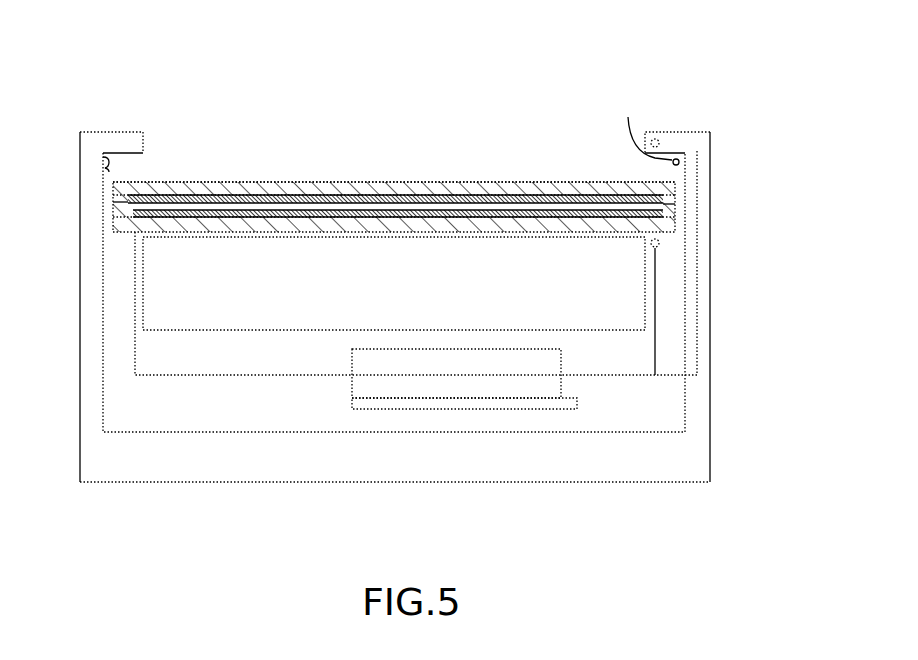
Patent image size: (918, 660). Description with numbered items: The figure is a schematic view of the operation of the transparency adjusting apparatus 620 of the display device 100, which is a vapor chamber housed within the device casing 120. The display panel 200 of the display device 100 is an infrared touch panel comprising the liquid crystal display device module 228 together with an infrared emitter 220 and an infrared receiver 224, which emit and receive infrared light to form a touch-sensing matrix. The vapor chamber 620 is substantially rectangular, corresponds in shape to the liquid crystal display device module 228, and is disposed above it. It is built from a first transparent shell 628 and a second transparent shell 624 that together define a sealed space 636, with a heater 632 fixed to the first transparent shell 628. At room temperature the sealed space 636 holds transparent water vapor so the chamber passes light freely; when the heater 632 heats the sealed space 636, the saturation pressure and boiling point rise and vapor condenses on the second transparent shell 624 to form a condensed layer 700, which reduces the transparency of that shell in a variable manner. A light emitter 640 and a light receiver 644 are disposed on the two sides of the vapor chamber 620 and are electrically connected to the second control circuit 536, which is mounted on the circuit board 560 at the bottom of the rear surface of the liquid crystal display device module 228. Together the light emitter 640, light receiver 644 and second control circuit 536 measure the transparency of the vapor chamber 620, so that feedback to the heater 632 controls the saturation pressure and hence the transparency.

The display device 100 is at (790, 55).
The device casing 120 is at (712, 440).
The infrared touch panel 200 is at (187, 388).
The infrared emitter 220 is at (105, 170).
The infrared receiver 224 is at (649, 128).
The liquid crystal display device module 228 is at (290, 333).
The second control circuit 536 is at (352, 397).
The circuit board 560 is at (578, 405).
The transparency adjusting apparatus 620 is at (488, 181).
The second transparent shell 624 is at (372, 200).
The first transparent shell 628 is at (578, 200).
The heater 632 is at (327, 203).
The sealed space 636 is at (293, 188).
The light emitter 640 is at (659, 144).
The light receiver 644 is at (660, 246).
The condensed layer 700 is at (195, 182).